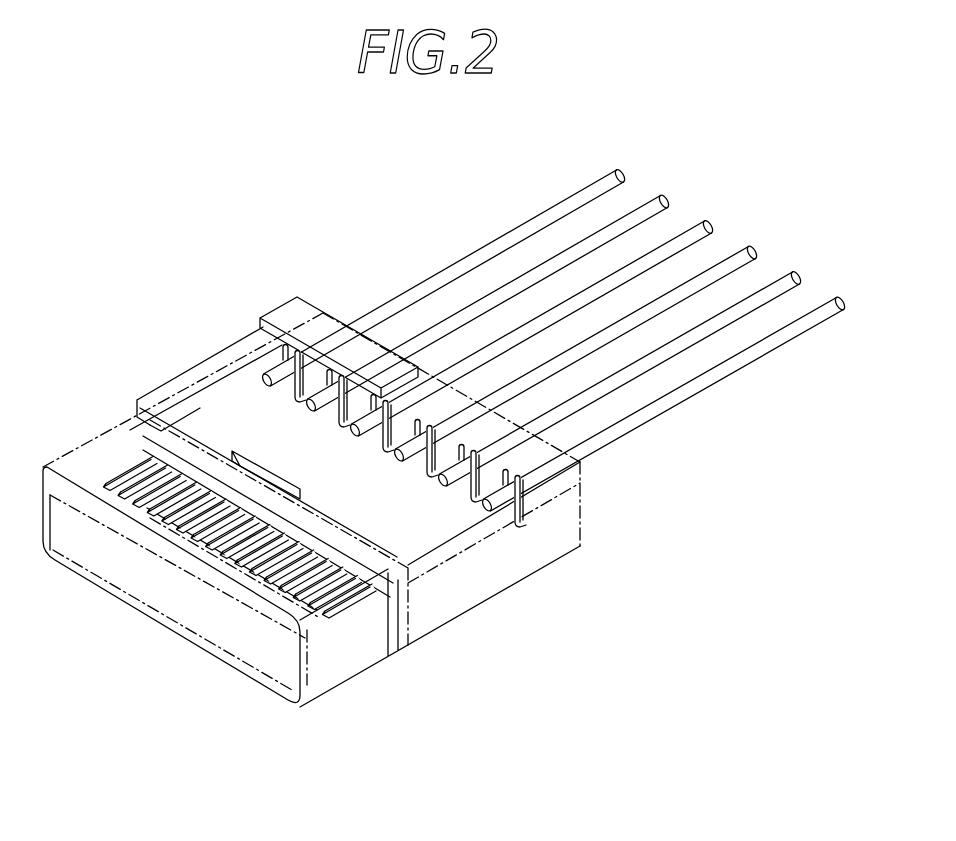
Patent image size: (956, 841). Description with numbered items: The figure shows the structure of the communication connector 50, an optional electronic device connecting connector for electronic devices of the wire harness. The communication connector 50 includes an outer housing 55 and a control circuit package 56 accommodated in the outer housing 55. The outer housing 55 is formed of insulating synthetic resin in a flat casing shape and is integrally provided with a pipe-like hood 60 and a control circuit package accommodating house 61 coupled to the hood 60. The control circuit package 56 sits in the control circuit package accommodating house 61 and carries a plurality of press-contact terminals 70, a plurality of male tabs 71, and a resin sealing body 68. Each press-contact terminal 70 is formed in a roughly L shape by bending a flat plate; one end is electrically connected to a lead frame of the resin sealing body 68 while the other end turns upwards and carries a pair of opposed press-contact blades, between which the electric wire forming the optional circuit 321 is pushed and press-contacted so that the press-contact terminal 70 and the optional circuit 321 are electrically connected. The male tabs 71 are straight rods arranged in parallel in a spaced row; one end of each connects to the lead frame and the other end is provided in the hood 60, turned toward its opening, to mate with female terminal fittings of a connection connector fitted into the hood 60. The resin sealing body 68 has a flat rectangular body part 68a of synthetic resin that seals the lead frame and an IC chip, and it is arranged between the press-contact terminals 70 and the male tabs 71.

The communication connector 50 is at (250, 313).
The outer housing 55 is at (429, 633).
The control circuit package 56 is at (455, 579).
The hood 60 is at (337, 672).
The control circuit package accommodating house 61 is at (562, 525).
The resin sealing body 68 is at (232, 400).
The body part 68a is at (200, 415).
The press-contact terminals 70 is at (388, 399).
The male tabs 71 is at (167, 519).
The optional circuit 321 is at (753, 253).